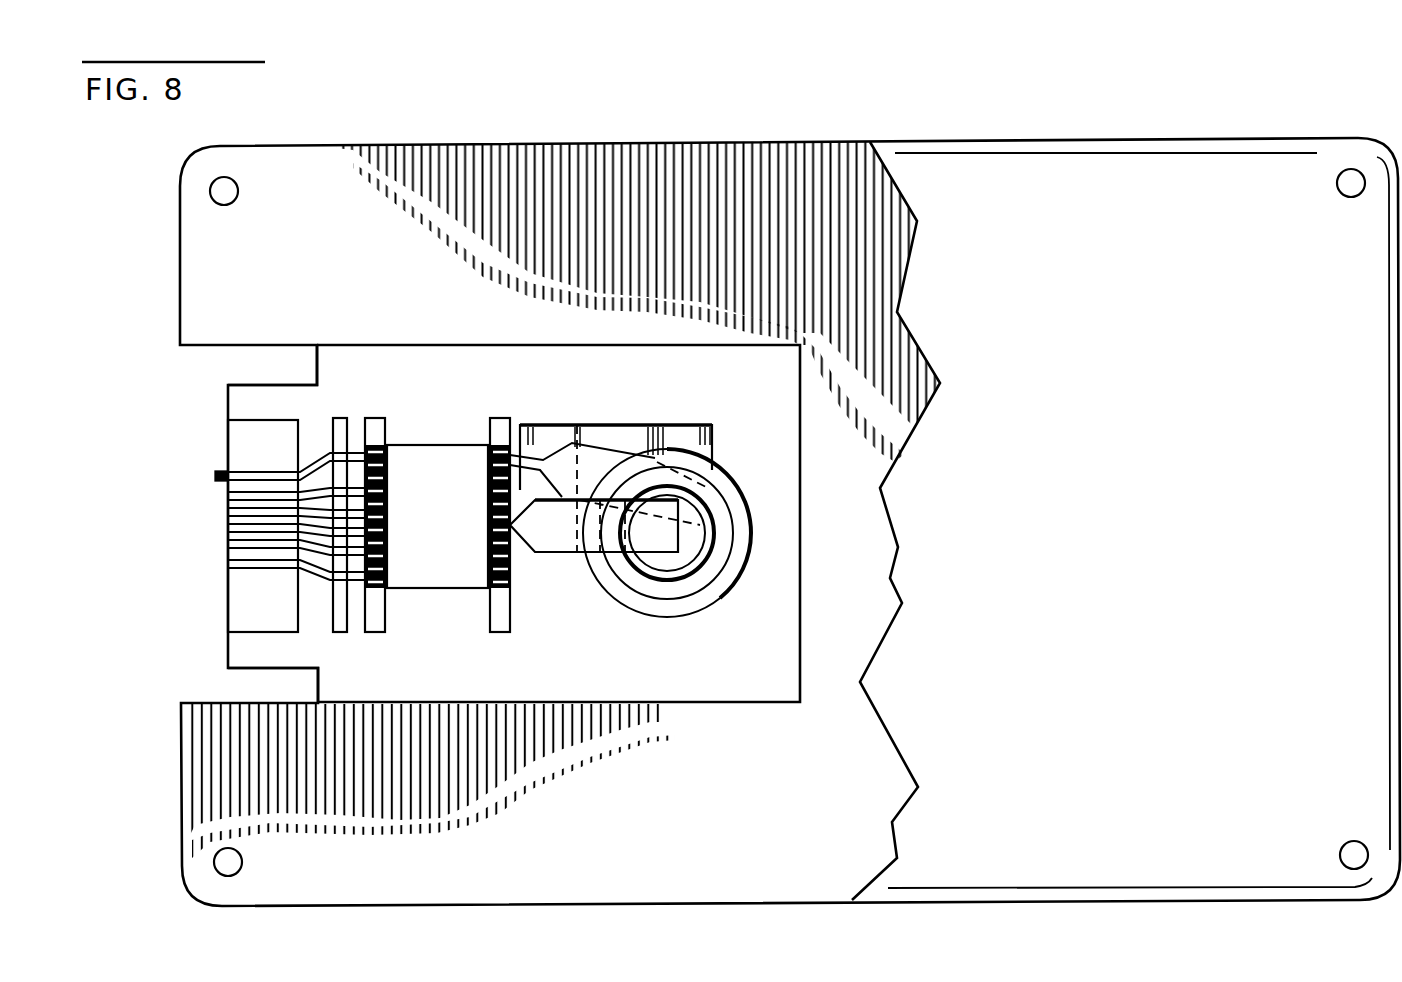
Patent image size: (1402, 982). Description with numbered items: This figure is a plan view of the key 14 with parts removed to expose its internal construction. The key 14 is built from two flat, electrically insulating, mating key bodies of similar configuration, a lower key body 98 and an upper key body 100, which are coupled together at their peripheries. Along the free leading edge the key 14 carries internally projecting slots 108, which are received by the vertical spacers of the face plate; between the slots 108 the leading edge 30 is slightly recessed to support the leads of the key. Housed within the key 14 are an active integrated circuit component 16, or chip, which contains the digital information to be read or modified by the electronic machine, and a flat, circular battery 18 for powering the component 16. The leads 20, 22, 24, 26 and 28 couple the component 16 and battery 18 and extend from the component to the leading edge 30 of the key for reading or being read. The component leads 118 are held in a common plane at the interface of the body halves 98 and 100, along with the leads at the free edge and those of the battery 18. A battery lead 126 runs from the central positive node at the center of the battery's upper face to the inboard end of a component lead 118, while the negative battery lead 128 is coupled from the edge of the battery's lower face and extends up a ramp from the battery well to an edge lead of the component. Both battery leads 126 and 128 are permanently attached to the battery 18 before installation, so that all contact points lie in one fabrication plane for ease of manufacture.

The key 14 is at (1238, 280).
The upper key body 100 is at (1003, 205).
The lower key body 98 is at (385, 290).
The slots 108 is at (250, 372).
The leading edge 30 is at (225, 613).
The lead 20 is at (215, 483).
The lead 22 is at (227, 508).
The lead 24 is at (227, 527).
The lead 26 is at (227, 547).
The lead 28 is at (227, 570).
The integrated circuit component 16 is at (443, 567).
The component leads 118 is at (487, 482).
The negative battery lead 128 is at (607, 452).
The battery lead 126 is at (548, 537).
The battery 18 is at (697, 567).